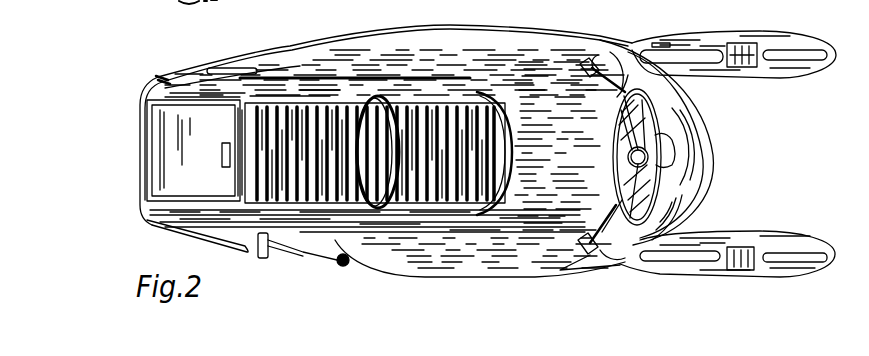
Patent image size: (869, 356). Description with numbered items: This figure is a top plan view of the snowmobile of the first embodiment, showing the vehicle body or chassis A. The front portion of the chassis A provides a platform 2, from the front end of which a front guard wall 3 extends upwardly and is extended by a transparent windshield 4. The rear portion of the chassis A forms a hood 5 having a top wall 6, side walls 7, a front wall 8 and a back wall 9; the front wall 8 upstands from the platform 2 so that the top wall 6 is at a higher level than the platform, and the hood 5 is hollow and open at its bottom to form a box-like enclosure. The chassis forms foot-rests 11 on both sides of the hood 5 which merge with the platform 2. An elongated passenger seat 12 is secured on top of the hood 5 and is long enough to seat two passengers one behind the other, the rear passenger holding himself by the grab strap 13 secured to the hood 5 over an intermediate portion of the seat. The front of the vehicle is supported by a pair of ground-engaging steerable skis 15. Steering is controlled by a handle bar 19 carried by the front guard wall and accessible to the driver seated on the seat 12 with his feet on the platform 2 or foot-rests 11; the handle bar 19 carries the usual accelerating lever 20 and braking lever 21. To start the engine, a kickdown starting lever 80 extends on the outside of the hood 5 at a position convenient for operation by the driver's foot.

The platform 2 is at (537, 207).
The front guard wall 3 is at (690, 107).
The transparent windshield 4 is at (690, 216).
The hood 5 is at (158, 76).
The top wall 6 is at (310, 102).
The side walls 7 is at (290, 62).
The front wall 8 is at (507, 147).
The back wall 9 is at (133, 134).
The foot-rests 11 is at (357, 46).
The passenger seat 12 is at (430, 140).
The grab strap 13 is at (378, 94).
The ski 15 is at (793, 68).
The handle bar 19 is at (613, 219).
The accelerating lever 20 is at (607, 259).
The braking lever 21 is at (607, 57).
The kickdown starting lever 80 is at (305, 266).
The chassis A is at (735, 157).